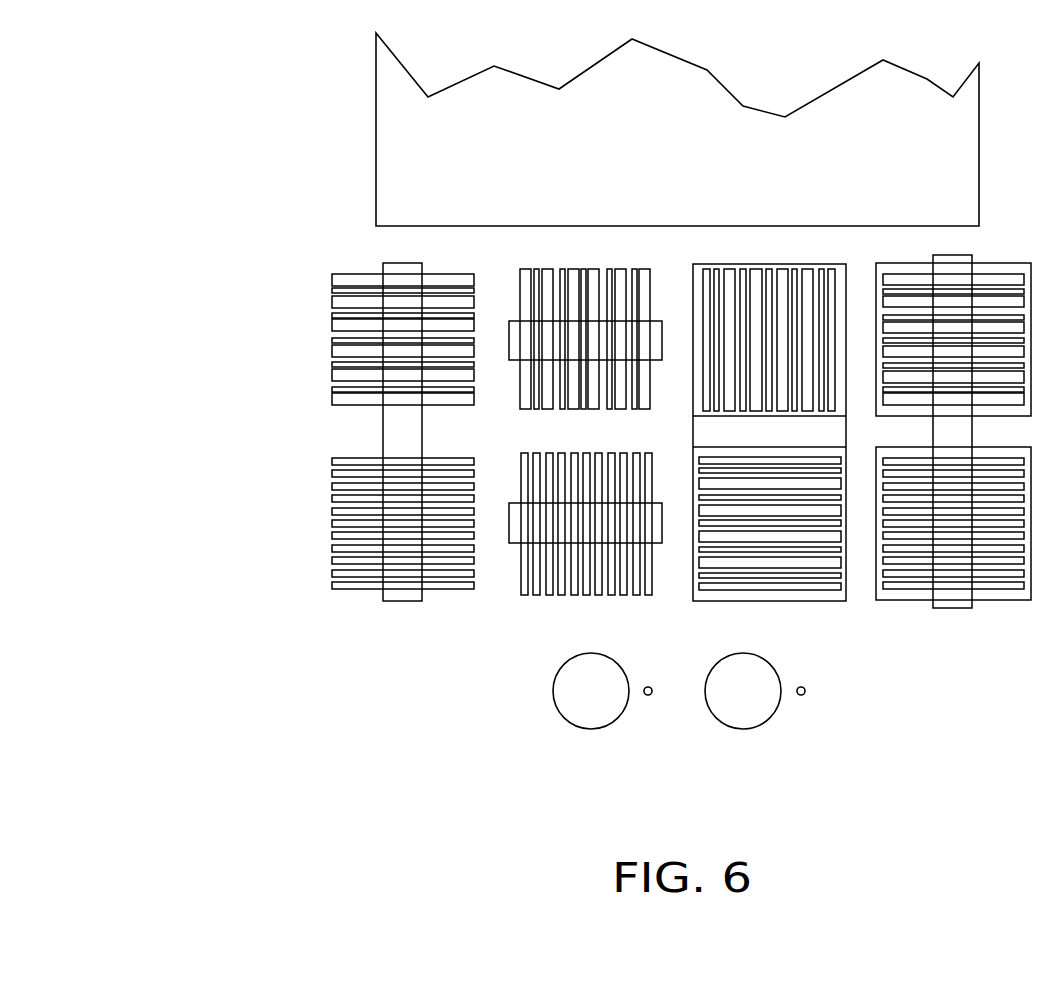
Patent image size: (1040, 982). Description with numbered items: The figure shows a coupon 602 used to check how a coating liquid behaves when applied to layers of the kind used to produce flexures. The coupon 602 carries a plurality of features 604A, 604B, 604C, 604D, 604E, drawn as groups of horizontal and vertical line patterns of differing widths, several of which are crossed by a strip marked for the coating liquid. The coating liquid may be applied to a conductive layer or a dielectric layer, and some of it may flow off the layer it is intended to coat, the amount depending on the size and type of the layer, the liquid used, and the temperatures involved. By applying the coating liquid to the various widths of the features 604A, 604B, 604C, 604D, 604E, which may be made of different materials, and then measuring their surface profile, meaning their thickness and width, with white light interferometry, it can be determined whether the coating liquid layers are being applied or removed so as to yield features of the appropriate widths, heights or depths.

The coupon 602 is at (267, 330).
The feature 604A is at (370, 438).
The feature 604B is at (577, 371).
The feature 604C is at (592, 555).
The feature 604D is at (780, 610).
The feature 604E is at (952, 615).